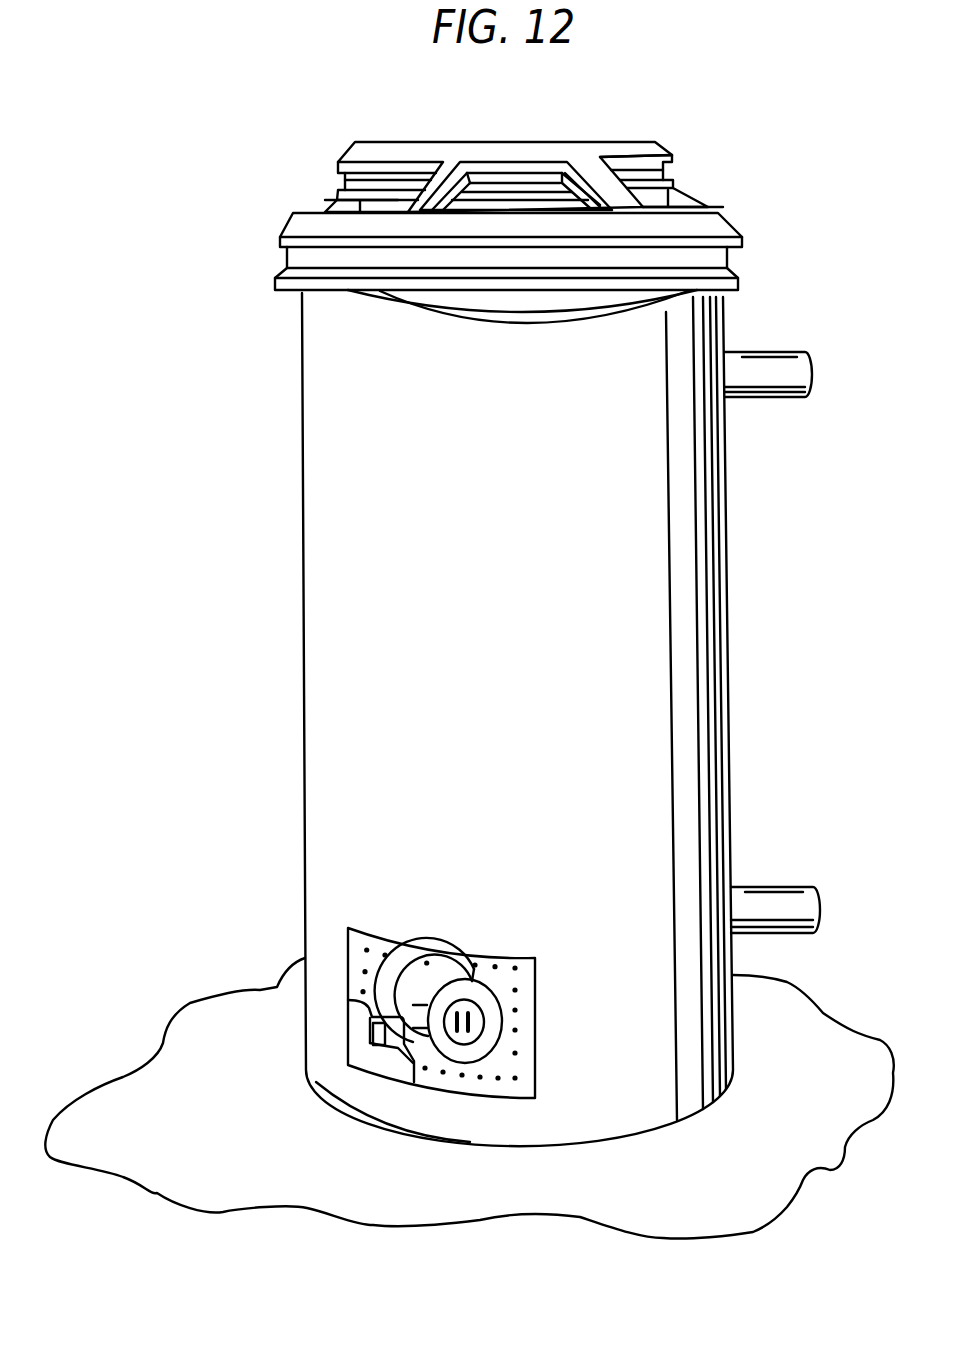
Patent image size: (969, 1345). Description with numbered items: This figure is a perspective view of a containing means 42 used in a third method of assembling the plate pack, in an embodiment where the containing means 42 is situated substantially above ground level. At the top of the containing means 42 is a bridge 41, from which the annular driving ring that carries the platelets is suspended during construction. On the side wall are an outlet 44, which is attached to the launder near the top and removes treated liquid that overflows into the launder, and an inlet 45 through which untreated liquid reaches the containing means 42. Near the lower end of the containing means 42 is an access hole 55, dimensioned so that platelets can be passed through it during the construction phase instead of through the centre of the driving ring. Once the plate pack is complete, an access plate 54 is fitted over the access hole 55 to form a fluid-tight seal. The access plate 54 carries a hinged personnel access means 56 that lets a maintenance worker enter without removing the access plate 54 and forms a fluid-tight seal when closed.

The bridge 41 is at (450, 150).
The containing means 42 is at (682, 665).
The outlet 44 is at (795, 352).
The inlet 45 is at (796, 886).
The access plate 54 is at (405, 960).
The access hole 55 is at (383, 1032).
The personnel access means 56 is at (487, 998).